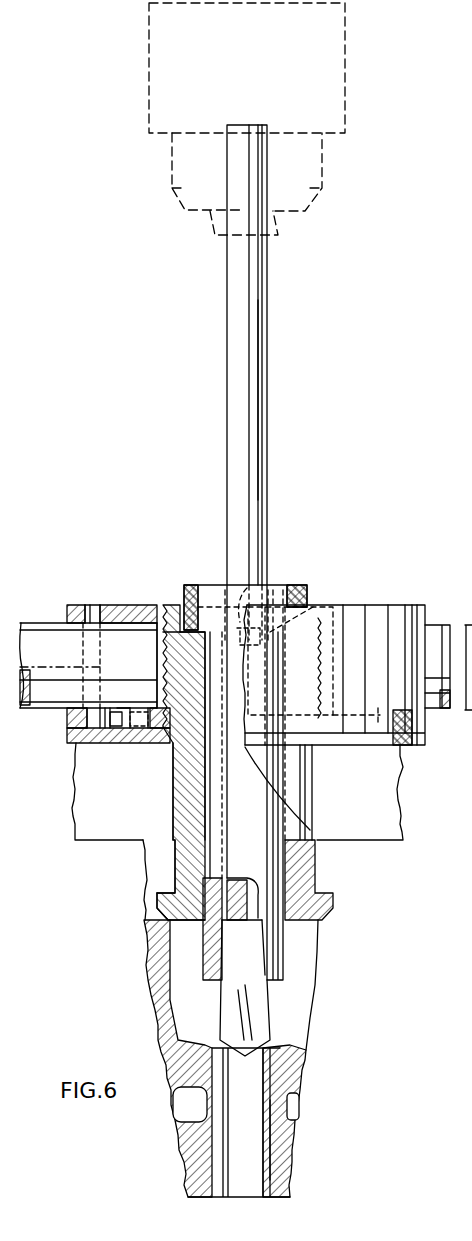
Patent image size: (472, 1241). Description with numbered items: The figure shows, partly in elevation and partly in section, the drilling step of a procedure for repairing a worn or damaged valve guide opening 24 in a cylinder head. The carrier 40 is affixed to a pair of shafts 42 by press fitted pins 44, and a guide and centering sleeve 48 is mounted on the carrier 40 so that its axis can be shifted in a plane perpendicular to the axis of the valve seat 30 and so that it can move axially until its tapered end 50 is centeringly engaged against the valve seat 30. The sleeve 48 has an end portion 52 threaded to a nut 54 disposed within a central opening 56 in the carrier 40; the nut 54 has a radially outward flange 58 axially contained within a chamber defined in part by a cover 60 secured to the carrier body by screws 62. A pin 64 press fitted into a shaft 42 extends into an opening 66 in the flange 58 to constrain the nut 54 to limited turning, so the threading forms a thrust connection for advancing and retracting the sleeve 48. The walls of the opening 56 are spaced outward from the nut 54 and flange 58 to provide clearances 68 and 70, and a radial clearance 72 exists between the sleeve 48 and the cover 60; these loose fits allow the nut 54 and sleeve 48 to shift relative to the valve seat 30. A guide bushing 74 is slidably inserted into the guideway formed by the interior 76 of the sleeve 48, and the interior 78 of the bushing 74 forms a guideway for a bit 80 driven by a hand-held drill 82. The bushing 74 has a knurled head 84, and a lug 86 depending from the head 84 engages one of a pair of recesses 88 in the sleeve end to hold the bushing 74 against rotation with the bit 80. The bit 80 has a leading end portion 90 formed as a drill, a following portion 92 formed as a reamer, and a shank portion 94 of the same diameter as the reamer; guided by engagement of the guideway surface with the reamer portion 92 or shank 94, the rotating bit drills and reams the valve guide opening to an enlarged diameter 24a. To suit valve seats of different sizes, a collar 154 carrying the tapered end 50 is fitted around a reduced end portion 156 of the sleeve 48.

The valve guide opening 24 is at (263, 1177).
The enlarged diameter 24a is at (273, 1138).
The valve seat 30 is at (327, 912).
The carrier 40 is at (377, 607).
The shaft 42 is at (38, 625).
The press fitted pin 44 is at (93, 604).
The guide and centering sleeve 48 is at (323, 806).
The tapered end 50 is at (165, 912).
The end portion 52 is at (190, 660).
The nut 54 is at (168, 604).
The central opening 56 is at (153, 632).
The radially outward flange 58 is at (160, 733).
The cover 60 is at (70, 744).
The screw 62 is at (408, 746).
The pin 64 is at (138, 729).
The opening 66 is at (128, 716).
The clearance 68 is at (158, 610).
The clearance 70 is at (115, 723).
The radial clearance 72 is at (181, 778).
The guide bushing 74 is at (279, 962).
The interior 76 is at (198, 880).
The interior 78 is at (217, 953).
The bit 80 is at (280, 440).
The hand-held drill 82 is at (345, 117).
The knurled head 84 is at (296, 586).
The lug 86 is at (256, 587).
The recess 88 is at (313, 607).
The leading end portion 90 is at (268, 1023).
The following portion 92 is at (238, 879).
The shank portion 94 is at (265, 380).
The collar 154 is at (181, 862).
The reduced end portion 156 is at (295, 865).